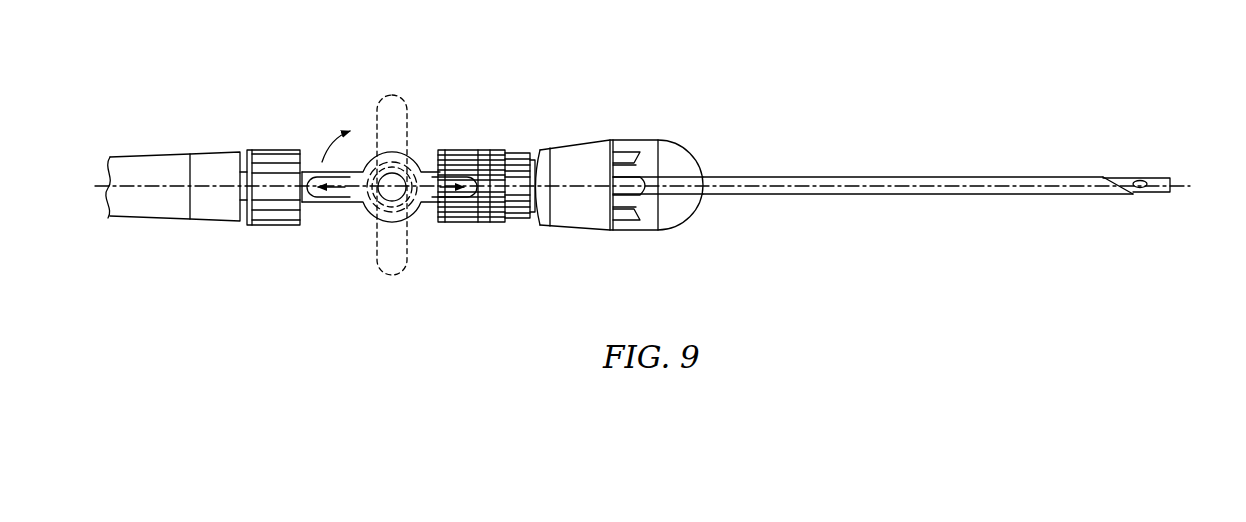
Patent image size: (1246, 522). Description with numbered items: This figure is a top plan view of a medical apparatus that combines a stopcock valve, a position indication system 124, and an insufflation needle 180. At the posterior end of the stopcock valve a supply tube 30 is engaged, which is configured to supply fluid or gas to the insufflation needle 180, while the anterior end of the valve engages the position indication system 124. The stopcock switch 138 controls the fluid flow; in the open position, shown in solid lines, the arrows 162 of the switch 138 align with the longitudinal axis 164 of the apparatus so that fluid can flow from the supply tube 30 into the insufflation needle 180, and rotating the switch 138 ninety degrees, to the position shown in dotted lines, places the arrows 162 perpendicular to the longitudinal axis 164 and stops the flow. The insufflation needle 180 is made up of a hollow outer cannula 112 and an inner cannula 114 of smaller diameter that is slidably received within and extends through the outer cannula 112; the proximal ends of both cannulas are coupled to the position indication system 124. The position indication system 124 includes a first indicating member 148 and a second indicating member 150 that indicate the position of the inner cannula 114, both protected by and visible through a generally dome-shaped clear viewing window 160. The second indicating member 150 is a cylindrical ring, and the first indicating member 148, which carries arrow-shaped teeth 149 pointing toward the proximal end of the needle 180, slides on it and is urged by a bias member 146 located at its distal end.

The supply tube 30 is at (160, 155).
The hollow outer cannula 112 is at (917, 177).
The inner cannula 114 is at (1153, 194).
The position indication system 124 is at (674, 98).
The stopcock switch 138 is at (425, 175).
The bias member 146 is at (462, 222).
The first indicating member 148 is at (610, 142).
The teeth 149 is at (612, 188).
The second indicating member 150 is at (623, 160).
The viewing window 160 is at (683, 146).
The arrows 162 is at (342, 200).
The longitudinal axis 164 is at (1177, 183).
The insufflation needle 180 is at (993, 150).